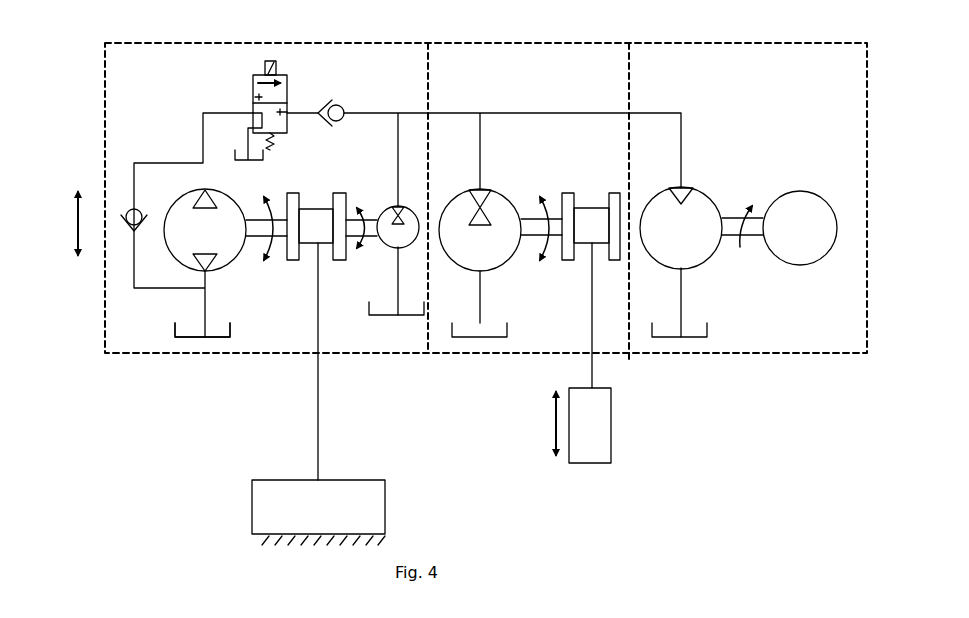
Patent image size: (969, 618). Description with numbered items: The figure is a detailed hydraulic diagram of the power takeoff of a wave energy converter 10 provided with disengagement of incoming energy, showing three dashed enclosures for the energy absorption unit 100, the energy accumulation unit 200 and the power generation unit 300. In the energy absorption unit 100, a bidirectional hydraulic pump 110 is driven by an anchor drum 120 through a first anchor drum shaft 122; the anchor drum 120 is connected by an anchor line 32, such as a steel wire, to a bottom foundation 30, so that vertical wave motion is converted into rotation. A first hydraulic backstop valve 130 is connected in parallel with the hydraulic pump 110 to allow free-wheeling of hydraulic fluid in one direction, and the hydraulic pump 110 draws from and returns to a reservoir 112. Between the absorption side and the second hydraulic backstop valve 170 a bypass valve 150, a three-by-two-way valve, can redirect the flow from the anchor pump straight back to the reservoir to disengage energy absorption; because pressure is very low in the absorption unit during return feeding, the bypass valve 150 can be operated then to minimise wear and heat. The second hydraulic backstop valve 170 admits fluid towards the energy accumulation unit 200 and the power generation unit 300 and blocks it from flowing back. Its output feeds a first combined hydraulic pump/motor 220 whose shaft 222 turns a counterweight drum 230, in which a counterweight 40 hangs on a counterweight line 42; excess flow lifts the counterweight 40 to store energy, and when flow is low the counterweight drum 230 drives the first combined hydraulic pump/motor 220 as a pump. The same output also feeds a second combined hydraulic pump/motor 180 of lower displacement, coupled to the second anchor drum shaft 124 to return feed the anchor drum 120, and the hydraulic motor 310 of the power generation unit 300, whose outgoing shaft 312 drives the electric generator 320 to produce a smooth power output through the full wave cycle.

The wave energy converter 10 is at (92, 45).
The bottom foundation 30 is at (298, 480).
The anchor line 32 is at (318, 415).
The counterweight 40 is at (612, 415).
The counterweight line 42 is at (593, 363).
The energy absorption unit 100 is at (202, 366).
The hydraulic pump 110 is at (228, 250).
The first tank 112 is at (188, 337).
The anchor drum 120 is at (310, 208).
The first anchor drum shaft 122 is at (263, 203).
The second anchor drum shaft 124 is at (357, 224).
The first hydraulic backstop valve 130 is at (130, 205).
The bypass valve 150 is at (288, 90).
The second hydraulic backstop valve 170 is at (347, 108).
The second combined hydraulic pump/motor 180 is at (395, 237).
The energy accumulation unit 200 is at (517, 358).
The first combined hydraulic pump/motor 220 is at (497, 250).
The shaft 222 is at (533, 222).
The counterweight drum 230 is at (587, 212).
The power generation unit 300 is at (734, 363).
The hydraulic motor 310 is at (700, 246).
The outgoing shaft 312 is at (733, 222).
The electric generator 320 is at (795, 203).